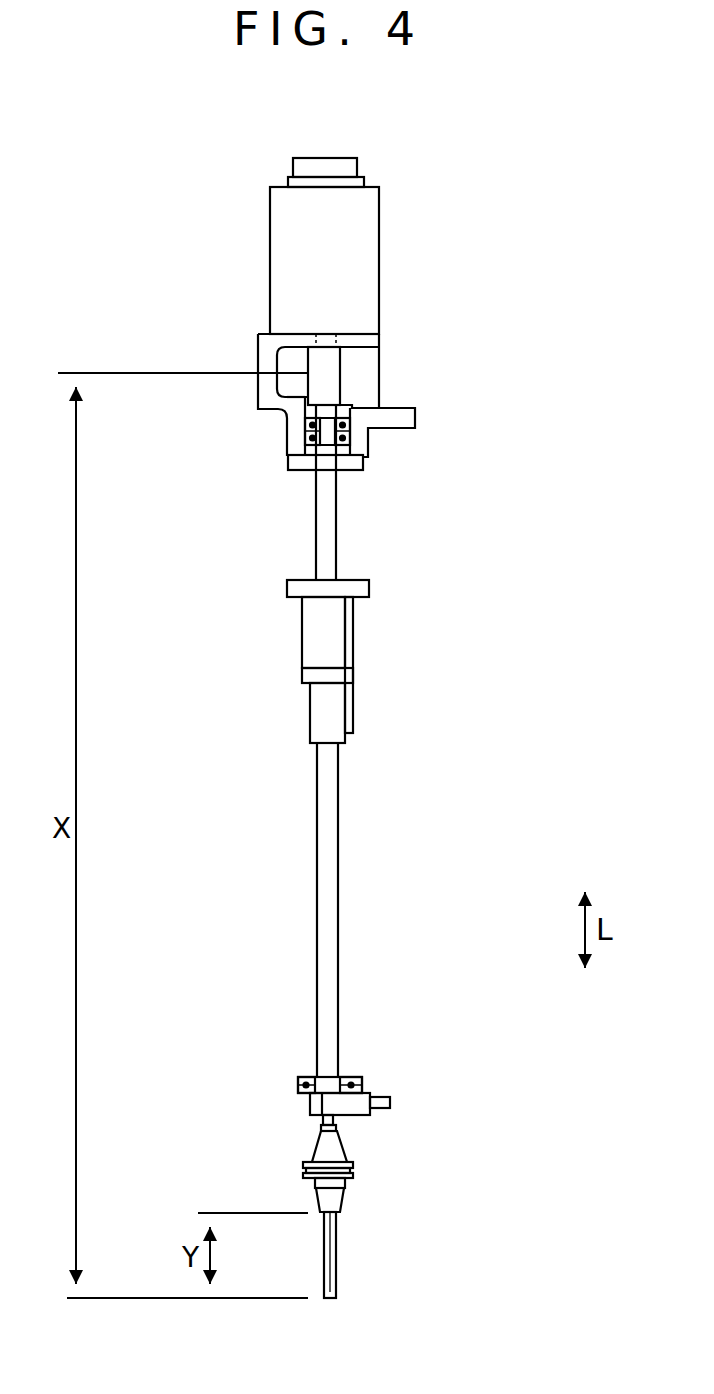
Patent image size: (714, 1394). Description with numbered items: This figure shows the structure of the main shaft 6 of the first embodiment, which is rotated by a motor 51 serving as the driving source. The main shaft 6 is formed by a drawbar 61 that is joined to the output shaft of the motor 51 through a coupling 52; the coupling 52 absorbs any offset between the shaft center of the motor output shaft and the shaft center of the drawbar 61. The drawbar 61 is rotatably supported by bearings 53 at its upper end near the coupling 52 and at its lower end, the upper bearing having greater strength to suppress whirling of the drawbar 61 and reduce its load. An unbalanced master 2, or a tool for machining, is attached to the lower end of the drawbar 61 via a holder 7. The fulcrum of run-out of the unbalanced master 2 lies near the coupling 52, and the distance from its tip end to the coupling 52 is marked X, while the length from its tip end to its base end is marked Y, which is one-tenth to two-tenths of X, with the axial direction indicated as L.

The motor 51 is at (344, 253).
The coupling 52 is at (327, 373).
The main shaft 6 is at (397, 753).
The drawbar 61 is at (327, 863).
The bearing 53 is at (352, 1082).
The holder 7 is at (330, 1147).
The unbalanced master 2 is at (327, 1236).